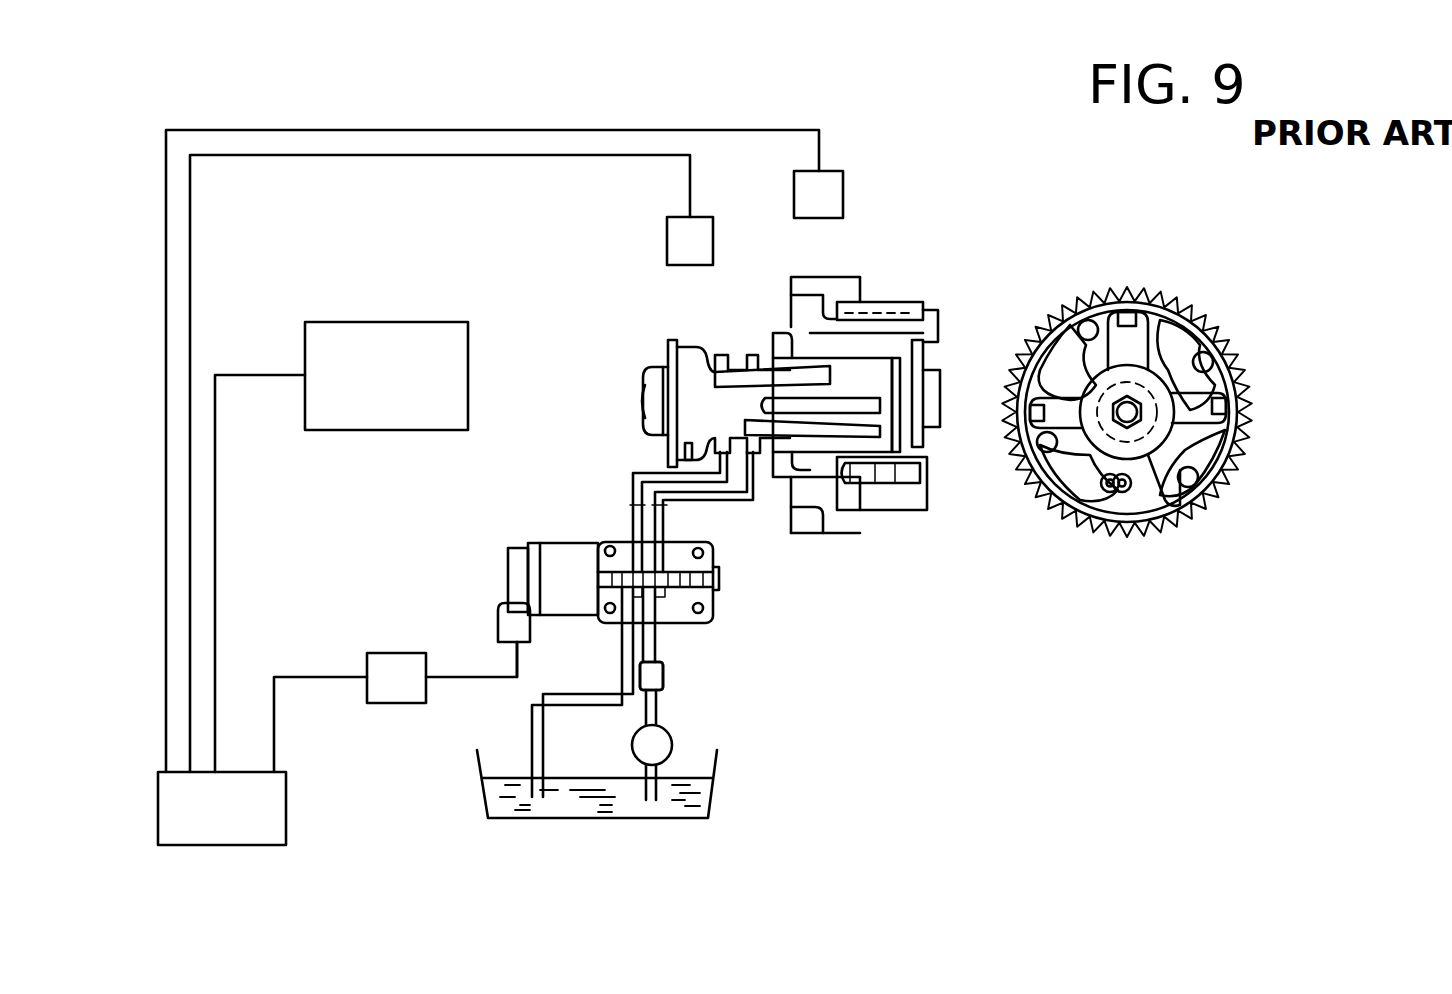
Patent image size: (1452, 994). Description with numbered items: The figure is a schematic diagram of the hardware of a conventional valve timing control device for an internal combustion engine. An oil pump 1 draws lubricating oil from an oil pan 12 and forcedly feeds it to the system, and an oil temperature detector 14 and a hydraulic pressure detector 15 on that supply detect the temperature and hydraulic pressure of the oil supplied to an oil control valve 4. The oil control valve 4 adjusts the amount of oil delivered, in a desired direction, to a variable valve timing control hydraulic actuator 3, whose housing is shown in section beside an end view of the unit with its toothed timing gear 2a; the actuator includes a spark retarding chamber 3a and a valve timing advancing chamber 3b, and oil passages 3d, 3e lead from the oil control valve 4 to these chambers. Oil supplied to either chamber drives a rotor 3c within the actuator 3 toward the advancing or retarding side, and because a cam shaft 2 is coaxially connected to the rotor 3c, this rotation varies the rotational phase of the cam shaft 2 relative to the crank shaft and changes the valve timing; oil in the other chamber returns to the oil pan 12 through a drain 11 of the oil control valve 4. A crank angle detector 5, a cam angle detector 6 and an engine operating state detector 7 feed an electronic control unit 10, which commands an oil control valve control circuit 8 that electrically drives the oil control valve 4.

The oil pump 1 is at (672, 730).
The cam shaft 2 is at (690, 346).
The timing gear 2a is at (1080, 505).
The variable valve timing control hydraulic actuator 3 is at (821, 533).
The spark retarding chamber 3a is at (1233, 358).
The valve timing advancing chamber 3b is at (1205, 442).
The rotor 3c is at (1130, 337).
The retard hydraulic passage 3d is at (672, 512).
The advance hydraulic passage 3e is at (620, 500).
The oil control valve 4 is at (719, 578).
The crank angle detector 5 is at (843, 190).
The cam angle detector 6 is at (667, 245).
The engine operating state detector 7 is at (378, 430).
The oil control valve control circuit 8 is at (398, 653).
The electronic control unit 10 is at (286, 805).
The drain 11 is at (585, 708).
The oil pan 12 is at (715, 792).
The oil temperature detector 14 is at (663, 673).
The hydraulic pressure detector 15 is at (651, 676).